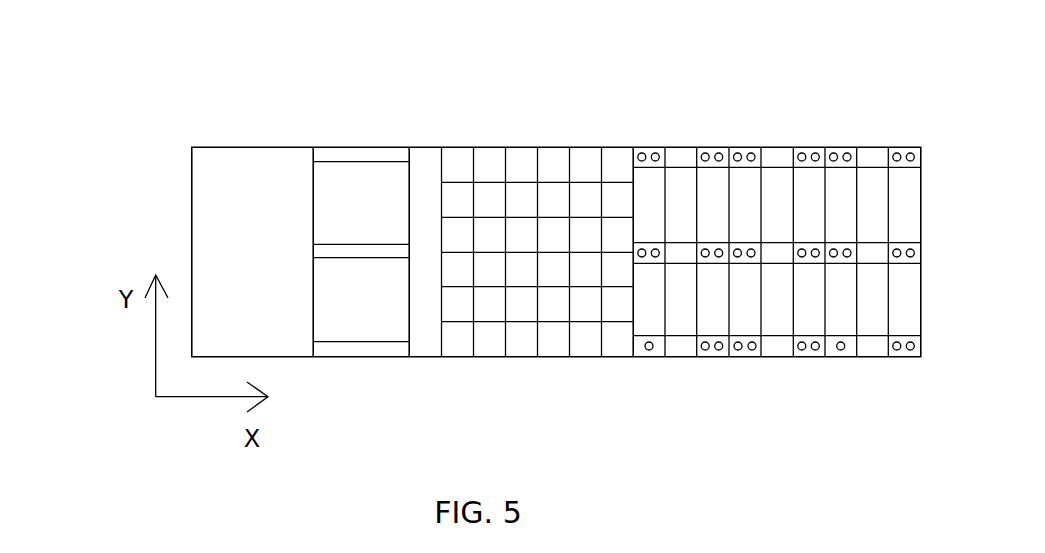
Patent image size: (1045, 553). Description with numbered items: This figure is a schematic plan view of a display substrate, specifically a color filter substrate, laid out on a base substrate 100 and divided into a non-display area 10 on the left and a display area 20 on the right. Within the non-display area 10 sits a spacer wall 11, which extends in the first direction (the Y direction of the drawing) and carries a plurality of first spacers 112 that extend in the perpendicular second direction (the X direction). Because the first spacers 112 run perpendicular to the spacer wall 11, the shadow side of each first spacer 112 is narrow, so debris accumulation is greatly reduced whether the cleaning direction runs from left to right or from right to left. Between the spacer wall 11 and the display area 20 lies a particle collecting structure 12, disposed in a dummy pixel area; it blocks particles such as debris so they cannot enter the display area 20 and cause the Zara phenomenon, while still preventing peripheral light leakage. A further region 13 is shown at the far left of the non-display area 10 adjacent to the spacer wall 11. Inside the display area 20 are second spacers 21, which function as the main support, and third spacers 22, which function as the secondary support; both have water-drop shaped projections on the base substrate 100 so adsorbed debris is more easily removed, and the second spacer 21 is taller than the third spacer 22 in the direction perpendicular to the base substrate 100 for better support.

The base substrate 100 is at (160, 188).
The non-display area 10 is at (207, 78).
The bonding region 13 is at (293, 135).
The spacer wall 11 is at (361, 264).
The first spacers 112 is at (347, 248).
The particle collecting structure 12 is at (623, 136).
The display area 20 is at (776, 255).
The second spacer 21 is at (841, 350).
The third spacer 22 is at (738, 350).